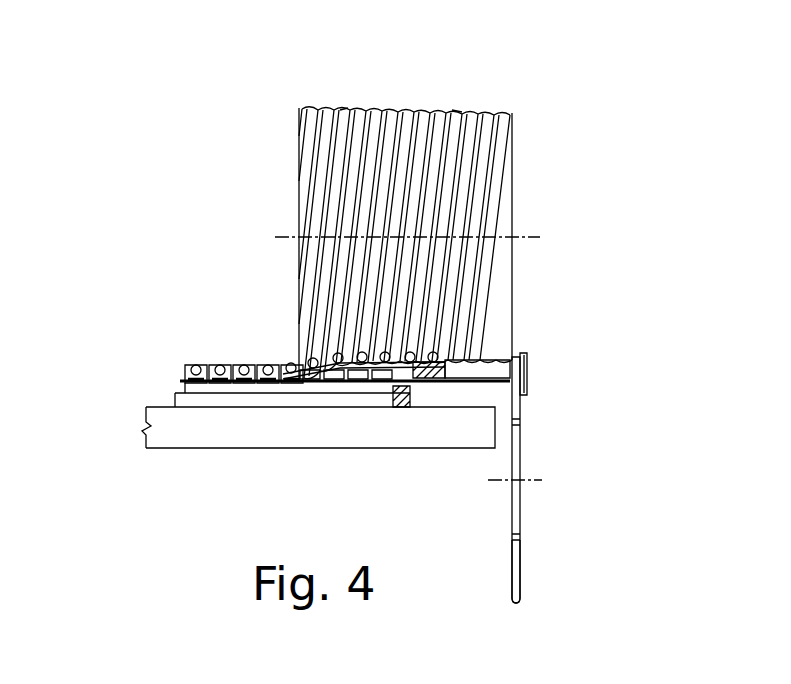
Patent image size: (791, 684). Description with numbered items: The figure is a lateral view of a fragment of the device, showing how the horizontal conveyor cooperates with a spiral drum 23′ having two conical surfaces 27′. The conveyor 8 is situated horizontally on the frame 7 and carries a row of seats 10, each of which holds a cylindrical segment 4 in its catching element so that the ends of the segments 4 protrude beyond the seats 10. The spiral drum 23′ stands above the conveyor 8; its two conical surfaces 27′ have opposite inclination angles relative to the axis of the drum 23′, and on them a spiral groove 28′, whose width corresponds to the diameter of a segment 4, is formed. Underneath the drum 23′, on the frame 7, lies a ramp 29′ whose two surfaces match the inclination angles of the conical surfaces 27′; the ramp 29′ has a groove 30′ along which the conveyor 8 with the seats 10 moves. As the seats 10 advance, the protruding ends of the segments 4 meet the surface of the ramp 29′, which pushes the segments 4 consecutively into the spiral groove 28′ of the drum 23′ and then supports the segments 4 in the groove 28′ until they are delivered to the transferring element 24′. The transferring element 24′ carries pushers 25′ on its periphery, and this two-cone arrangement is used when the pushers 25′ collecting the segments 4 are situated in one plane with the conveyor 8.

The segment 4 is at (196, 368).
The seat 10 is at (187, 375).
The conveyor 8 is at (185, 393).
The frame 7 is at (232, 432).
The conical surface 27′ is at (343, 108).
The spiral groove 28′ is at (316, 208).
The spiral drum 23′ is at (500, 208).
The groove 30′ is at (413, 385).
The ramp 29′ is at (431, 380).
The pusher 25′ is at (519, 421).
The transferring element 24′ is at (518, 568).